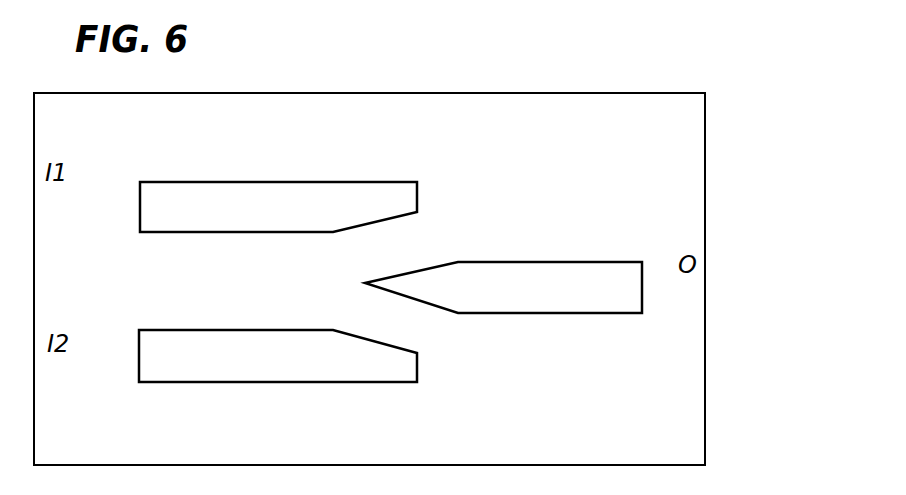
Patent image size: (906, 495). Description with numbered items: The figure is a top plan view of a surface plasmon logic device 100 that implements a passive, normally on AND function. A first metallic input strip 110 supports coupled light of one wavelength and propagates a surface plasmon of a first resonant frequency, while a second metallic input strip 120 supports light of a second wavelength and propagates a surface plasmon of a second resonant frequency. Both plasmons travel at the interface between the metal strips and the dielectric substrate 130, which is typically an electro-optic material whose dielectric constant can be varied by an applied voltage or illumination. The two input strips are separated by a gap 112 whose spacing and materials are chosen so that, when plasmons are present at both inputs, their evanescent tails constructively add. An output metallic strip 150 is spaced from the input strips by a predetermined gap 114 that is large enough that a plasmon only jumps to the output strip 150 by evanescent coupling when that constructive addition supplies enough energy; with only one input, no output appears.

The surface plasmon logic device 100 is at (706, 249).
The first metallic input strip 110 is at (250, 182).
The second metallic input strip 120 is at (258, 382).
The gap 112 is at (173, 233).
The gap 114 is at (392, 190).
The output metallic strip 150 is at (553, 262).
The dielectric substrate 130 is at (636, 441).